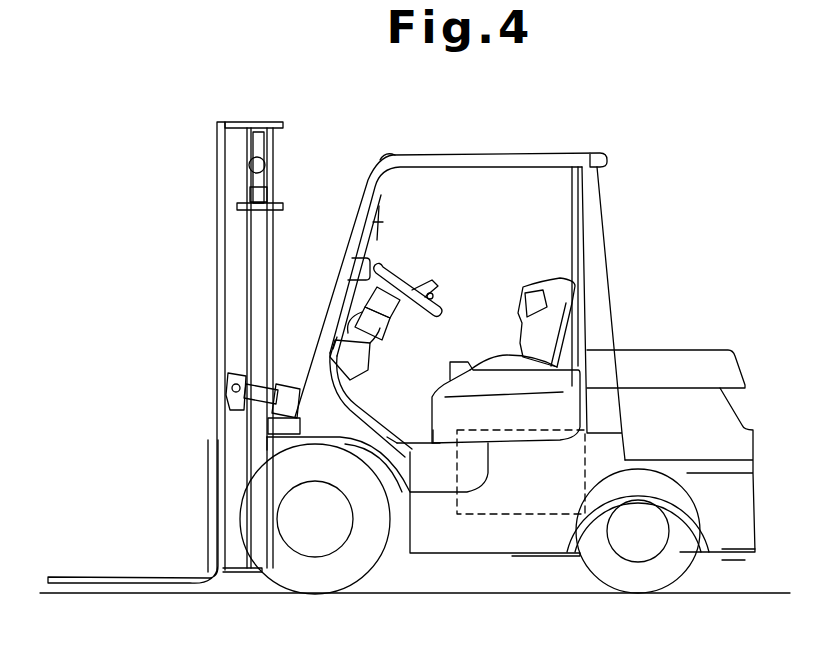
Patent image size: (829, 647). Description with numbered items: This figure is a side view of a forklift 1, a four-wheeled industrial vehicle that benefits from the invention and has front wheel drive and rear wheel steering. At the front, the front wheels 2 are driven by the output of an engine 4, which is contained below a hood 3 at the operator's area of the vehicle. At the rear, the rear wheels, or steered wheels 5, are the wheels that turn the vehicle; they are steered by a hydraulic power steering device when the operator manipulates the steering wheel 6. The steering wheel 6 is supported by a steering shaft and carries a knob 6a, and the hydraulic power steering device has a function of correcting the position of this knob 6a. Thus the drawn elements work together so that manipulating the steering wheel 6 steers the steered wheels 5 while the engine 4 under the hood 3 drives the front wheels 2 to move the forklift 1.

The forklift 1 is at (640, 193).
The front wheels 2 is at (370, 570).
The hood 3 is at (493, 380).
The engine 4 is at (480, 514).
The steered wheels 5 is at (592, 573).
The steering wheel 6 is at (392, 282).
The knob 6a is at (434, 295).